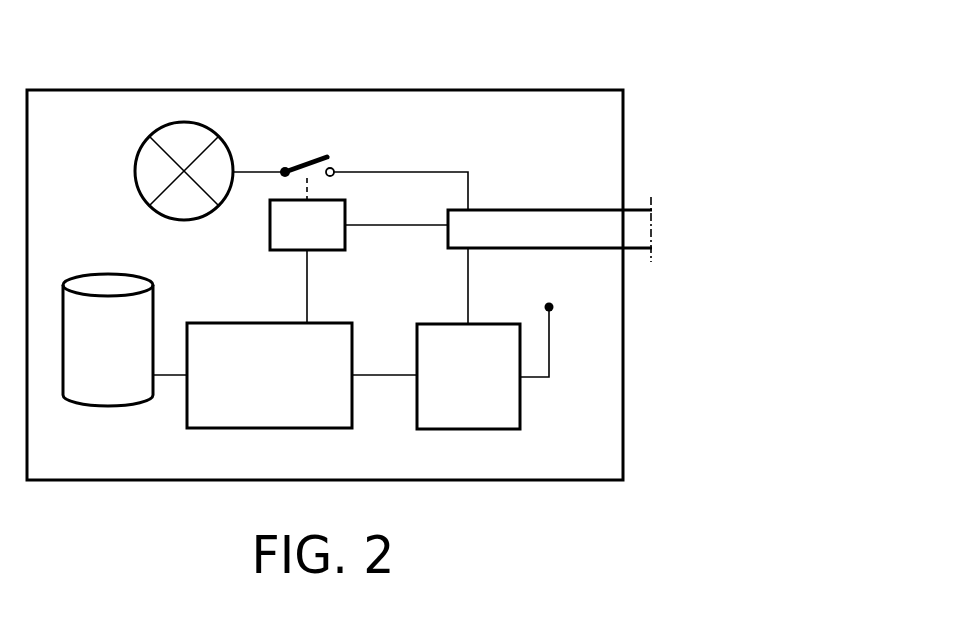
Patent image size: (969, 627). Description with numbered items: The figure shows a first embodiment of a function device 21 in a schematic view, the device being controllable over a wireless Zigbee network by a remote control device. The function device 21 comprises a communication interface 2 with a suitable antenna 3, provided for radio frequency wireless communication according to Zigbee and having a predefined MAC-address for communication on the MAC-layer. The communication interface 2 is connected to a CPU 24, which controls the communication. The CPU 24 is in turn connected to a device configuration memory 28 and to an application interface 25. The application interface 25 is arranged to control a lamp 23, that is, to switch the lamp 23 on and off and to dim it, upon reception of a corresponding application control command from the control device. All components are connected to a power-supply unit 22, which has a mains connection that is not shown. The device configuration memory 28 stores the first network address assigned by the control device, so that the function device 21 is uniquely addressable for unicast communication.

The communication interface 2 is at (513, 402).
The antenna 3 is at (551, 340).
The function device 21 is at (542, 88).
The power-supply unit 22 is at (553, 217).
The lamp 23 is at (137, 144).
The CPU 24 is at (240, 330).
The application interface 25 is at (273, 228).
The device configuration memory 28 is at (108, 367).